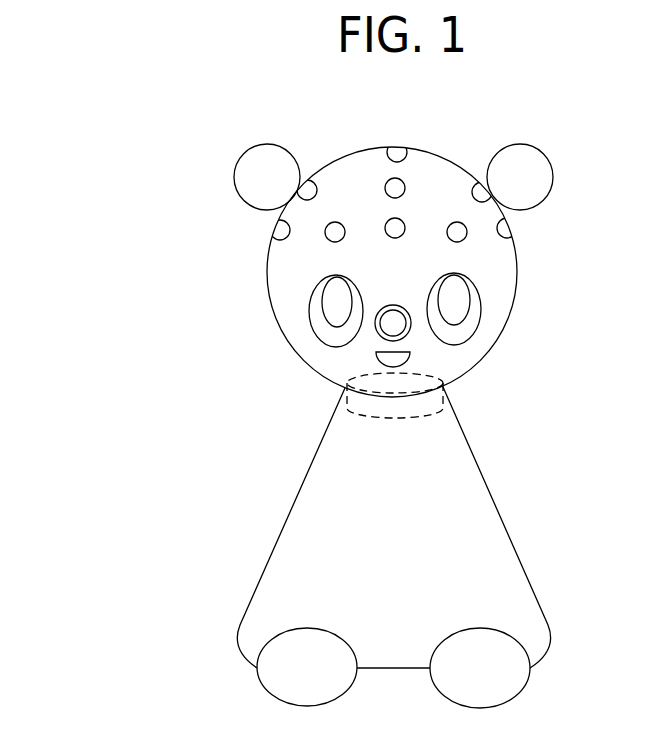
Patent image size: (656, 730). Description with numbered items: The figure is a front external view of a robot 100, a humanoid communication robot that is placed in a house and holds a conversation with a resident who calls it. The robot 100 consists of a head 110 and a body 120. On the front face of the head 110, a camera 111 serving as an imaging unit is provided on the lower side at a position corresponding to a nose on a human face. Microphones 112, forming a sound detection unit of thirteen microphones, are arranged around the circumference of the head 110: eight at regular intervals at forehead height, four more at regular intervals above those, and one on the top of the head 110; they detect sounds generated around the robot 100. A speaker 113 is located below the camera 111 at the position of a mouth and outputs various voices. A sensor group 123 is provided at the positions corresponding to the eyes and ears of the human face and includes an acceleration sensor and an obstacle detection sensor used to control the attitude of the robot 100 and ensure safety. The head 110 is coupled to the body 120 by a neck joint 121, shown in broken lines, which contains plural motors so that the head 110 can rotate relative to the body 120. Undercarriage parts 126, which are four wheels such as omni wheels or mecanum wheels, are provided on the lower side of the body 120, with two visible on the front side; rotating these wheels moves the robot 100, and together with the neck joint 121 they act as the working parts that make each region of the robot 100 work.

The robot 100 is at (141, 126).
The head 110 is at (242, 292).
The camera 111 is at (388, 332).
The microphones 112 is at (398, 220).
The speaker 113 is at (410, 357).
The body 120 is at (259, 506).
The neck joint 121 is at (360, 415).
The sensor group 123 is at (248, 163).
The undercarriage parts 126 is at (273, 697).